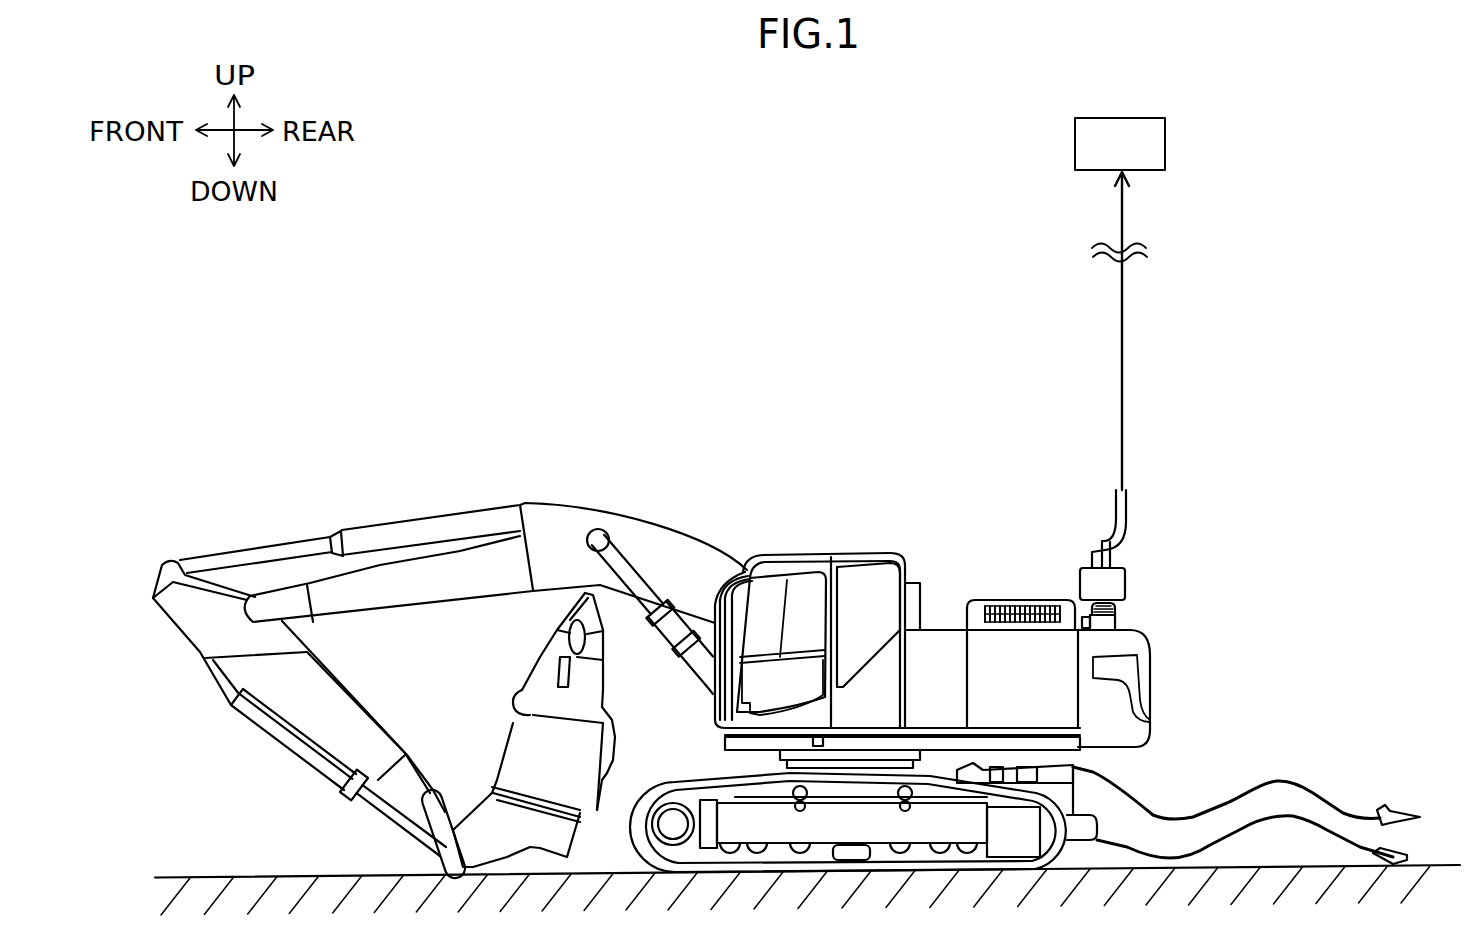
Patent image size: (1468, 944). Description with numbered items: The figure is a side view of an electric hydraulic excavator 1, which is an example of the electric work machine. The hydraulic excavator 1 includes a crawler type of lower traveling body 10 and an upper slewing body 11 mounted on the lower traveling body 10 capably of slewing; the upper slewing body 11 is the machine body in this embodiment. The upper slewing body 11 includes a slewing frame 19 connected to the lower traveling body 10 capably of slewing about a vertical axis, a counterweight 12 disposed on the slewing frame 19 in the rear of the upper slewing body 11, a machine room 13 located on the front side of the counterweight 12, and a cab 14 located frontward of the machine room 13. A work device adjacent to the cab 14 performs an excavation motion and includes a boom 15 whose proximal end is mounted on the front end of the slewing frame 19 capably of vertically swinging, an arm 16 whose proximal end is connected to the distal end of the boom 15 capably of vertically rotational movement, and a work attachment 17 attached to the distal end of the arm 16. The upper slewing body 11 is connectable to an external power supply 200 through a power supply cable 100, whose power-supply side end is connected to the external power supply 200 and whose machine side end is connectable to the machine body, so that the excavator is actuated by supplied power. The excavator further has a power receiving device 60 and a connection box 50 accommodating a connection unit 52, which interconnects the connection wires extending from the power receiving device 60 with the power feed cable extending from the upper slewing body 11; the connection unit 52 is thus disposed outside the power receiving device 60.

The hydraulic excavator 1 is at (367, 390).
The lower traveling body 10 is at (1101, 806).
The upper slewing body 11 is at (1177, 726).
The counterweight 12 is at (1148, 653).
The machine room 13 is at (986, 655).
The cab 14 is at (820, 553).
The boom 15 is at (467, 567).
The arm 16 is at (293, 700).
The work attachment 17 is at (540, 652).
The slewing frame 19 is at (723, 762).
The connection box 50 is at (1173, 618).
The connection unit 52 is at (1118, 615).
The power receiving device 60 is at (1127, 580).
The power supply cable 100 is at (1123, 392).
The external power supply 200 is at (1172, 139).